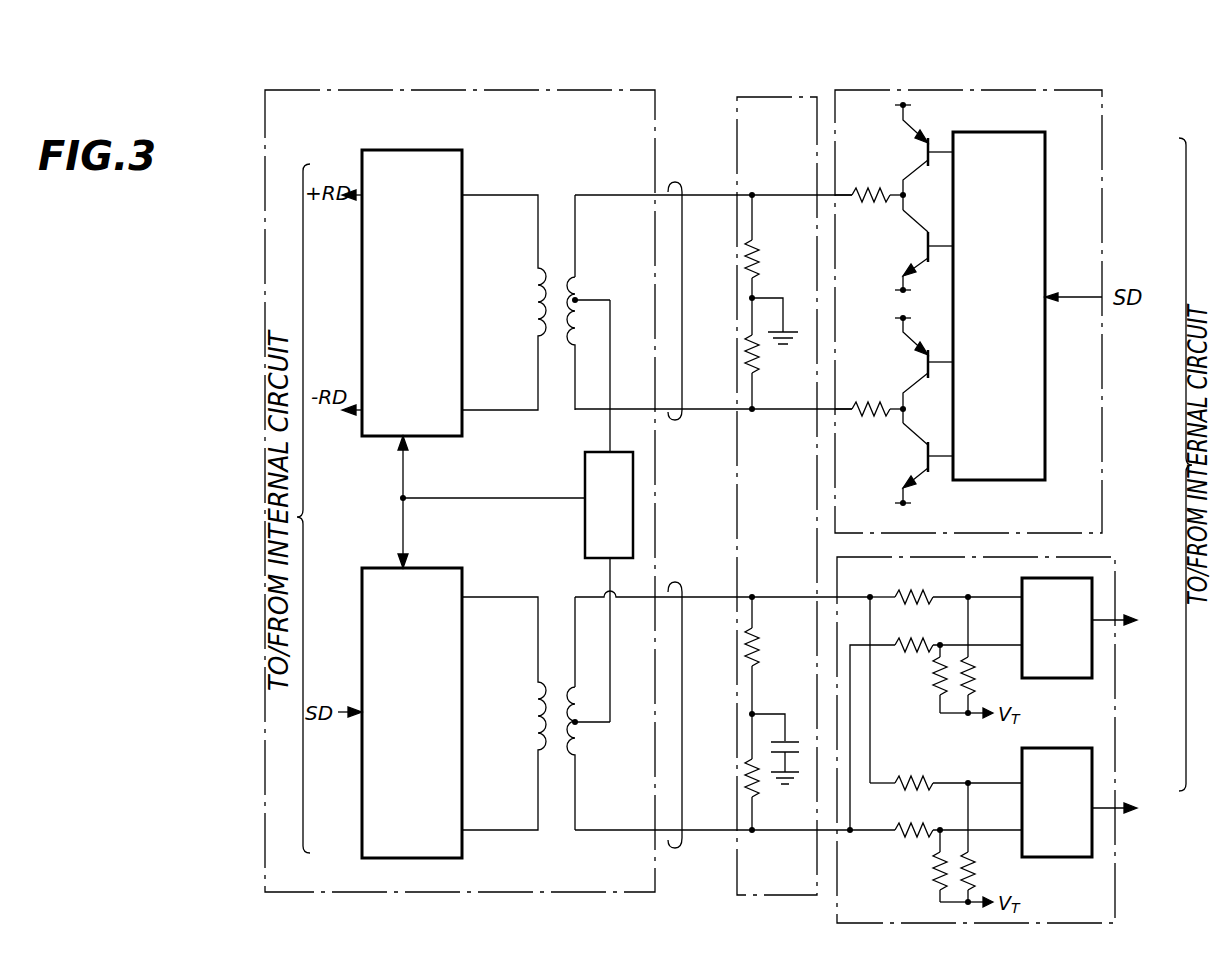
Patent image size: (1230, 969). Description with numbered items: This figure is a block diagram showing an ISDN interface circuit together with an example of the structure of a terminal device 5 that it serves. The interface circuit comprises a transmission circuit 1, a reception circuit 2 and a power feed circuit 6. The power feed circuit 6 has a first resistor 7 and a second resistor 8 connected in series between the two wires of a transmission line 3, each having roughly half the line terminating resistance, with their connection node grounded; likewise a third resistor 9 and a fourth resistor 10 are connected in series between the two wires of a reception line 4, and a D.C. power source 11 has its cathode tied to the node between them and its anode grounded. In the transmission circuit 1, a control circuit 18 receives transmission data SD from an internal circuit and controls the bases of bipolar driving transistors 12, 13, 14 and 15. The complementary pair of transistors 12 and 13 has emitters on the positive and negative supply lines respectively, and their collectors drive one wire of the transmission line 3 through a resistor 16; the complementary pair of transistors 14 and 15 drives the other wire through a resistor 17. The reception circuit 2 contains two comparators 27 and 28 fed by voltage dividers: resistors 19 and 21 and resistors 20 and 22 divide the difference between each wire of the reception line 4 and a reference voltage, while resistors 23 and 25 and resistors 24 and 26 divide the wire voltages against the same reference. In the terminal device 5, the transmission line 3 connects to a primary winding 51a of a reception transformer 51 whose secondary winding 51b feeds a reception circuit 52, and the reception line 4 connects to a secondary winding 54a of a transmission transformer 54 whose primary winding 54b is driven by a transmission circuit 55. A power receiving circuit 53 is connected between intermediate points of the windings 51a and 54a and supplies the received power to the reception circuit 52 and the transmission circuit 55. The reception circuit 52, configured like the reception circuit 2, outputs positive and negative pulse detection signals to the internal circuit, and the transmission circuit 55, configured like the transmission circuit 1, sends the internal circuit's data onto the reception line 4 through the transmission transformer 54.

The transmission circuit 1 is at (886, 90).
The reception circuit 2 is at (1104, 556).
The transmission line 3 is at (685, 180).
The reception line 4 is at (684, 582).
The terminal device 5 is at (513, 90).
The power feed circuit 6 is at (752, 96).
The first resistor 7 is at (760, 257).
The second resistor 8 is at (758, 356).
The third resistor 9 is at (760, 644).
The fourth resistor 10 is at (756, 777).
The D.C. power source 11 is at (794, 726).
The driving transistor 12 is at (908, 150).
The driving transistor 13 is at (902, 256).
The driving transistor 14 is at (912, 360).
The driving transistor 15 is at (904, 464).
The resistor 16 is at (876, 196).
The resistor 17 is at (870, 402).
The control circuit 18 is at (986, 132).
The resistor 19 is at (916, 594).
The resistor 20 is at (910, 650).
The resistor 21 is at (974, 684).
The resistor 22 is at (930, 702).
The resistor 23 is at (914, 778).
The resistor 24 is at (902, 842).
The resistor 25 is at (978, 866).
The resistor 26 is at (926, 876).
The comparator 27 is at (1020, 580).
The comparator 28 is at (1022, 750).
The reception transformer 51 is at (552, 274).
The primary winding 51a is at (578, 263).
The secondary winding 51b is at (534, 272).
The reception circuit 52 is at (410, 150).
The power receiving circuit 53 is at (585, 484).
The transmission transformer 54 is at (550, 687).
The secondary winding 54a is at (580, 720).
The primary winding 54b is at (532, 726).
The transmission circuit 55 is at (432, 568).